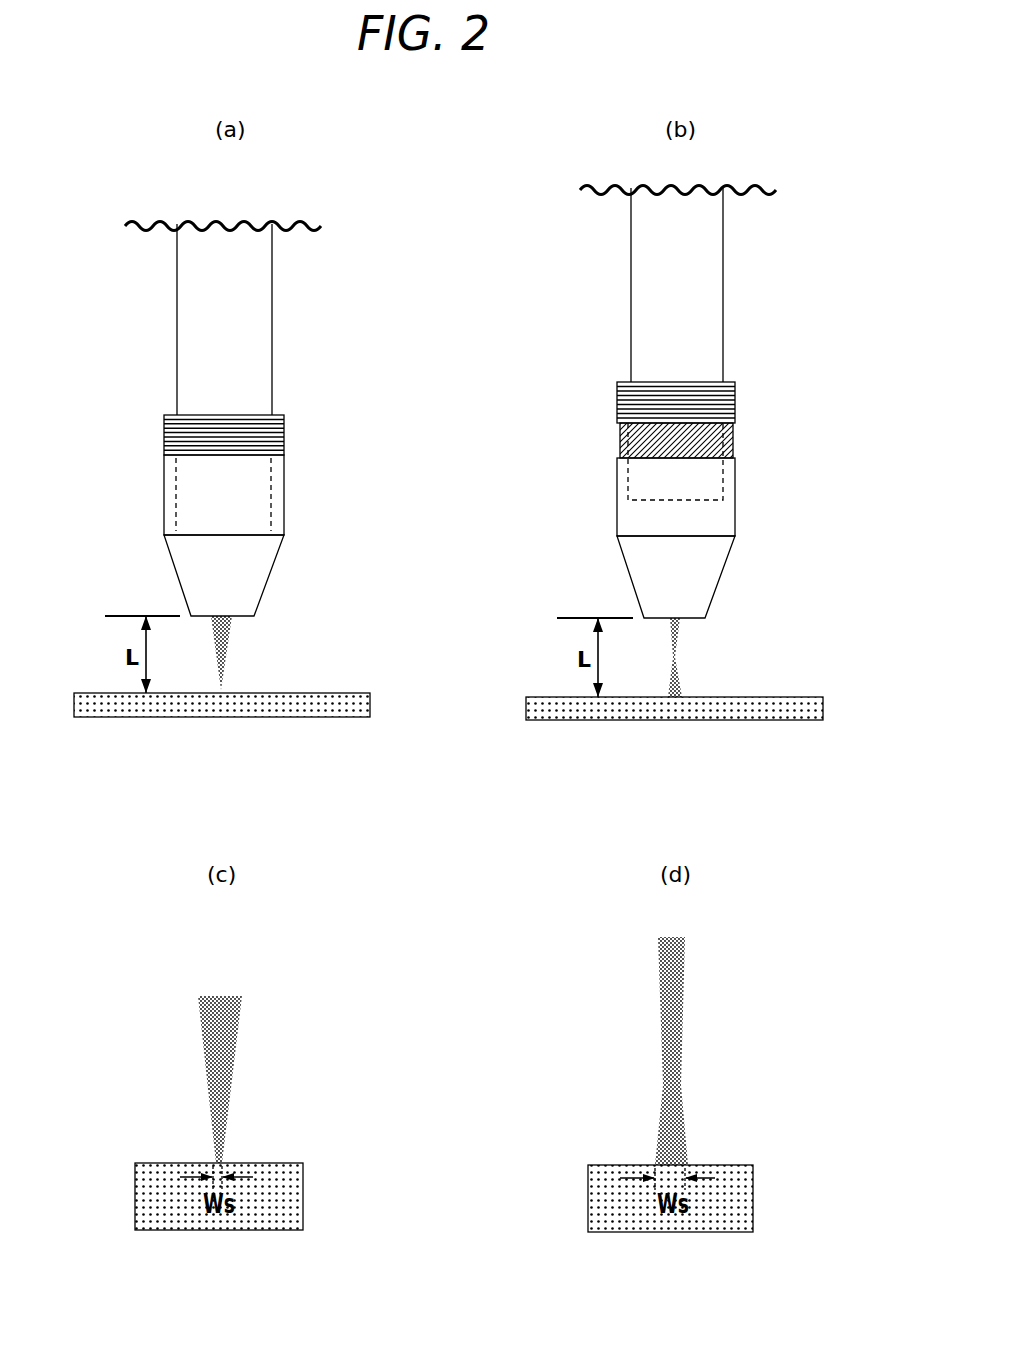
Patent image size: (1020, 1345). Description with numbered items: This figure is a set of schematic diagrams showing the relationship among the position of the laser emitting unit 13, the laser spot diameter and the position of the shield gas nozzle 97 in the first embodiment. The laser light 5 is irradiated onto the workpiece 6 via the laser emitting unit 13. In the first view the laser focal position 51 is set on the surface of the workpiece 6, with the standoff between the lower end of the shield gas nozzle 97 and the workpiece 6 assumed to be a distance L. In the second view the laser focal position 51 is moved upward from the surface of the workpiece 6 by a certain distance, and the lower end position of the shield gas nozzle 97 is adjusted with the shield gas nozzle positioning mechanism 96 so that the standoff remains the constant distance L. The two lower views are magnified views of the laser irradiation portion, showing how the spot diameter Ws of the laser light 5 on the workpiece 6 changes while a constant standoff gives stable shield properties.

The laser emitting unit 13 is at (198, 297).
The shield gas nozzle positioning mechanism 96 is at (197, 438).
The shield gas nozzle 97 is at (197, 571).
The laser light 5 is at (226, 640).
The laser focal position 51 is at (223, 693).
The workpiece 6 is at (92, 705).